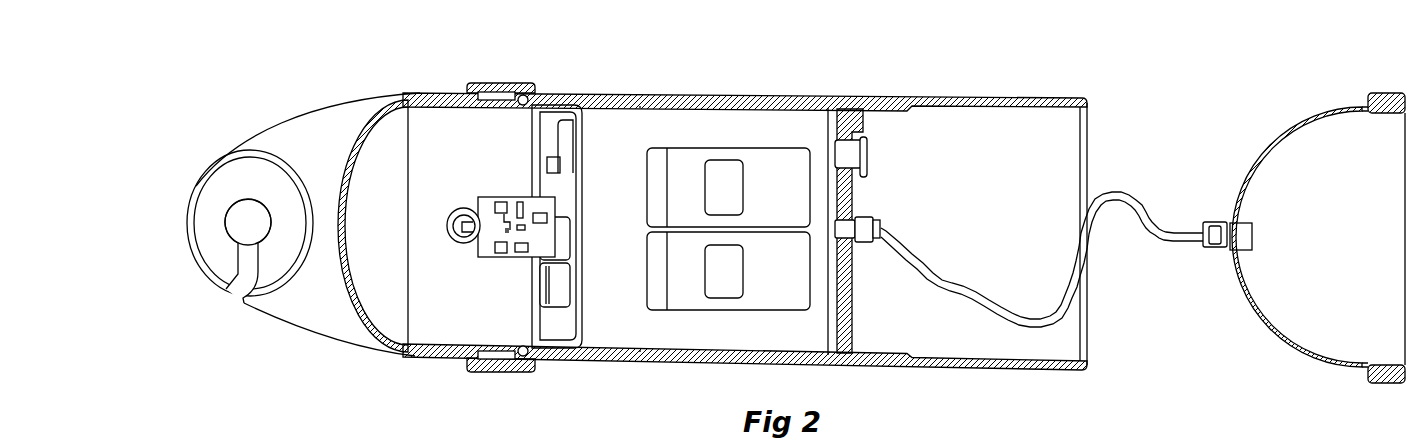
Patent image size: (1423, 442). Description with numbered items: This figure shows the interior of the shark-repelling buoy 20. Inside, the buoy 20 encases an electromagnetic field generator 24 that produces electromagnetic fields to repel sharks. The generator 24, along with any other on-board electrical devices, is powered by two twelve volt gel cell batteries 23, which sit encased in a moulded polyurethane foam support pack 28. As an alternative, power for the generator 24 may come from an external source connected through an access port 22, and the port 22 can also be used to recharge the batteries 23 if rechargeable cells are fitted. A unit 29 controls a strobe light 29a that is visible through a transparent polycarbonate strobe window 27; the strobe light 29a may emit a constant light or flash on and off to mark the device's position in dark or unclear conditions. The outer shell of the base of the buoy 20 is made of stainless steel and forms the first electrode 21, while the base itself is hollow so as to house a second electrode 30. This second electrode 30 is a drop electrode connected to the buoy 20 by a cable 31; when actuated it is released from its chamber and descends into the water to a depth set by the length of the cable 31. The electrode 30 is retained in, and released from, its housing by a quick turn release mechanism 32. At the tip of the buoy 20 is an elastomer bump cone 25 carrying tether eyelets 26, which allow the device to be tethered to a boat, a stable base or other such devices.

The buoy 20 is at (1100, 360).
The first electrode 21 is at (1020, 93).
The access port 22 is at (860, 130).
The gel cell batteries 23 is at (680, 160).
The electromagnetic field generator 24 is at (563, 187).
The elastomer bump cone 25 is at (277, 310).
The tether eyelets 26 is at (238, 217).
The strobe window 27 is at (442, 362).
The support pack 28 is at (752, 122).
The unit 29 is at (490, 200).
The strobe light 29a is at (453, 204).
The second electrode 30 is at (1282, 318).
The cable 31 is at (1120, 200).
The quick turn release mechanism 32 is at (1367, 378).